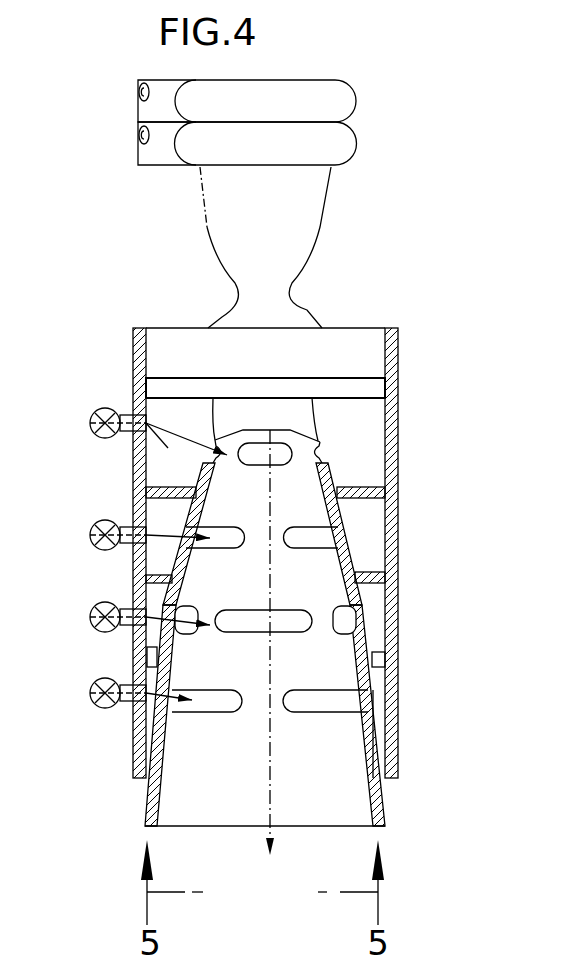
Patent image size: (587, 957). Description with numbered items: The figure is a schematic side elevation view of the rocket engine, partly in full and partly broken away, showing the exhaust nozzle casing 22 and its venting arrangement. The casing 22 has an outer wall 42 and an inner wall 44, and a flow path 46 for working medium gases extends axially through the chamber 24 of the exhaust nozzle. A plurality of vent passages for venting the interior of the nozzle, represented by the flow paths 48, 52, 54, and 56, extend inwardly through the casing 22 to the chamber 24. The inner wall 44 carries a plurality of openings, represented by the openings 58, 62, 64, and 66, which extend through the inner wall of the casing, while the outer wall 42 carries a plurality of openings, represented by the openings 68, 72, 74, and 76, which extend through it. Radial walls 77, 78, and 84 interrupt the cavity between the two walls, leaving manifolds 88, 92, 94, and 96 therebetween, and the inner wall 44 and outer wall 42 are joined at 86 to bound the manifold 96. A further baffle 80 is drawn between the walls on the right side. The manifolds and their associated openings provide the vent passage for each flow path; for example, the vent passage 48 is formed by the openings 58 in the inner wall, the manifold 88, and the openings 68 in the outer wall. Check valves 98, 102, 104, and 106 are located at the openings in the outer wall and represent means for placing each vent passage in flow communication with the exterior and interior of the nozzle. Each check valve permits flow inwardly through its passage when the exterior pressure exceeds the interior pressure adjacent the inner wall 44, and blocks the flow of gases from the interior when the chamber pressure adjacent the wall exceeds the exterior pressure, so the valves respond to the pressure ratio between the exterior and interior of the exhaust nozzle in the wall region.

The casing 22 is at (128, 340).
The chamber 24 is at (249, 819).
The outer wall 42 is at (398, 497).
The inner wall 44 is at (385, 800).
The flow path 46 is at (272, 762).
The vent passage 48 is at (88, 422).
The vent passage 52 is at (88, 535).
The vent passage 54 is at (88, 616).
The vent passage 56 is at (88, 692).
The openings 58 is at (253, 457).
The openings 62 is at (222, 540).
The openings 64 is at (237, 622).
The openings 66 is at (205, 702).
The openings 68 is at (186, 443).
The openings 72 is at (150, 534).
The openings 74 is at (178, 603).
The openings 76 is at (150, 690).
The radial wall 77 is at (378, 385).
The radial wall 78 is at (358, 490).
The lower baffle 80 is at (368, 575).
The radial wall 84 is at (377, 652).
The joint 86 is at (385, 757).
The manifold 88 is at (180, 436).
The manifold 92 is at (150, 562).
The manifold 94 is at (163, 645).
The manifold 96 is at (150, 675).
The check valve 98 is at (105, 408).
The check valve 102 is at (105, 518).
The check valve 104 is at (100, 605).
The check valve 106 is at (100, 710).